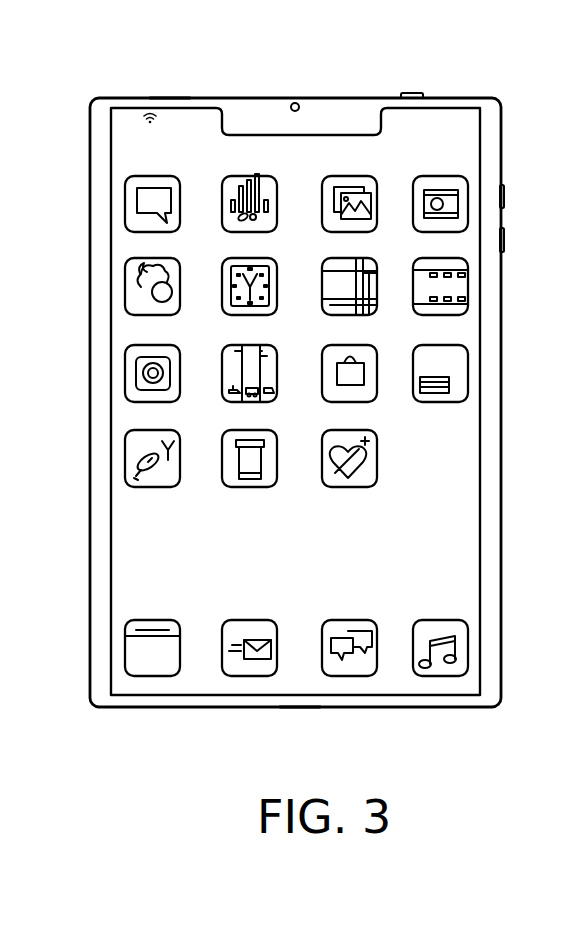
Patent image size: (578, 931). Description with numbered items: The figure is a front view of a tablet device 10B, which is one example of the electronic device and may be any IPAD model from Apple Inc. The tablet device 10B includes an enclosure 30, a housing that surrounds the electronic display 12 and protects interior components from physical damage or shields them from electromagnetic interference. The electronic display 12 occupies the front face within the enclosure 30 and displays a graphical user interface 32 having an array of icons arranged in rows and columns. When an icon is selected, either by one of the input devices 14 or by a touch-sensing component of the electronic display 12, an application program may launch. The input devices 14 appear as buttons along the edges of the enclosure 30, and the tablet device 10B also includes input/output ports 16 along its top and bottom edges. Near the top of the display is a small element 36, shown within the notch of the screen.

The tablet device 10B is at (286, 387).
The electronic display 12 is at (480, 394).
The input devices 14 is at (413, 95).
The input/output (I/O) ports 16 is at (167, 98).
The enclosure 30 is at (501, 347).
The graphical user interface (GUI) 32 is at (457, 476).
The camera 36 is at (299, 107).